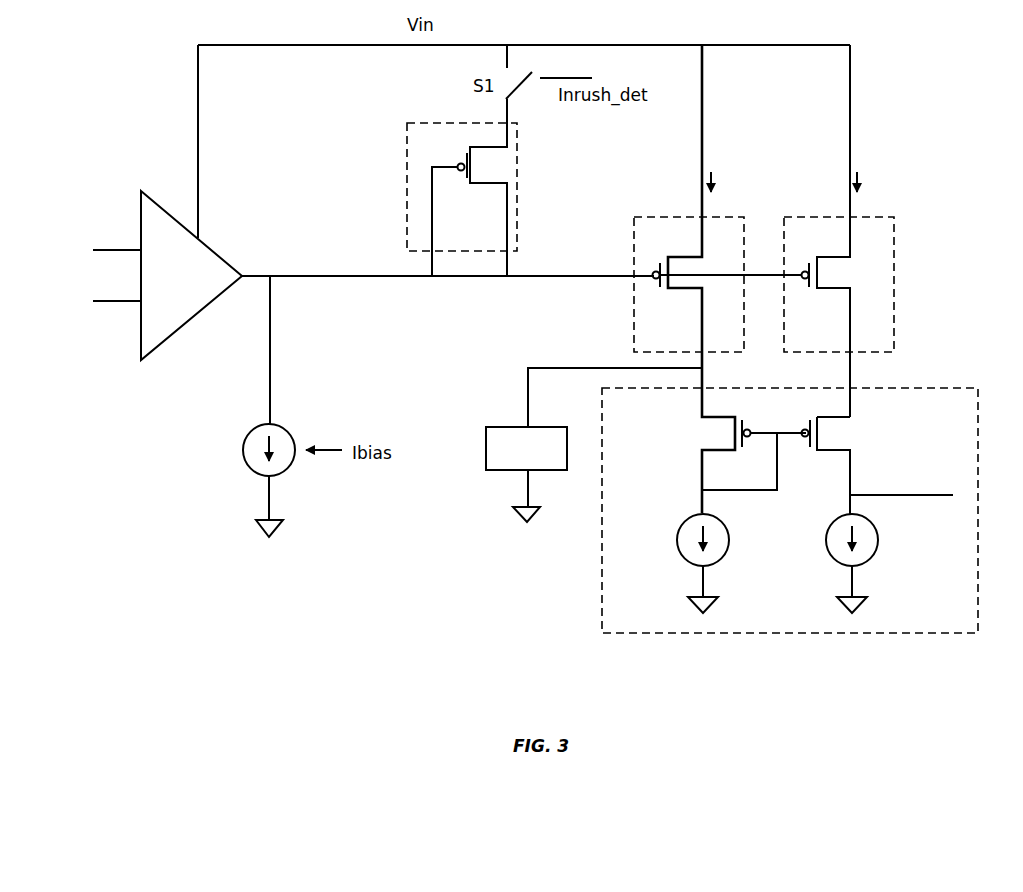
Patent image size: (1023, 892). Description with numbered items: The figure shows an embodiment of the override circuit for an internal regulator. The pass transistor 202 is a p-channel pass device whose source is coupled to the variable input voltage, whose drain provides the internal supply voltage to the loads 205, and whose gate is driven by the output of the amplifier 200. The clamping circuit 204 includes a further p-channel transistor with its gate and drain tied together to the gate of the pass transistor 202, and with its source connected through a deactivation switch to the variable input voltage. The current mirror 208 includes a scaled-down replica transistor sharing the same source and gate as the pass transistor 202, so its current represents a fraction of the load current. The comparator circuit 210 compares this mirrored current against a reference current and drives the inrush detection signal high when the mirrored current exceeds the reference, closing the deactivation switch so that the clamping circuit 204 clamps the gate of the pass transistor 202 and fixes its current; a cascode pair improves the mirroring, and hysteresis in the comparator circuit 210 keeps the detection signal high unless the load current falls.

The amplifier 200 is at (192, 279).
The pass transistor 202 is at (737, 241).
The clamping circuit 204 is at (450, 146).
The loads 205 is at (543, 459).
The current mirror 208 is at (889, 241).
The comparator circuit 210 is at (962, 419).